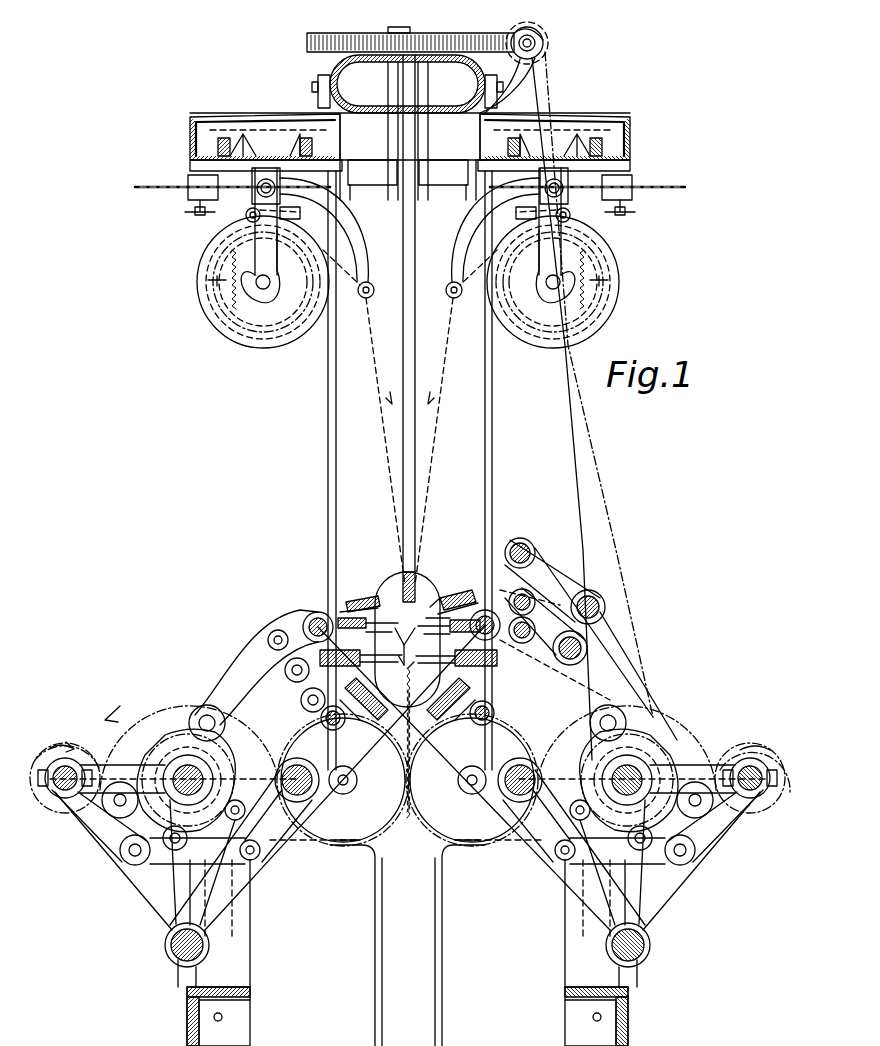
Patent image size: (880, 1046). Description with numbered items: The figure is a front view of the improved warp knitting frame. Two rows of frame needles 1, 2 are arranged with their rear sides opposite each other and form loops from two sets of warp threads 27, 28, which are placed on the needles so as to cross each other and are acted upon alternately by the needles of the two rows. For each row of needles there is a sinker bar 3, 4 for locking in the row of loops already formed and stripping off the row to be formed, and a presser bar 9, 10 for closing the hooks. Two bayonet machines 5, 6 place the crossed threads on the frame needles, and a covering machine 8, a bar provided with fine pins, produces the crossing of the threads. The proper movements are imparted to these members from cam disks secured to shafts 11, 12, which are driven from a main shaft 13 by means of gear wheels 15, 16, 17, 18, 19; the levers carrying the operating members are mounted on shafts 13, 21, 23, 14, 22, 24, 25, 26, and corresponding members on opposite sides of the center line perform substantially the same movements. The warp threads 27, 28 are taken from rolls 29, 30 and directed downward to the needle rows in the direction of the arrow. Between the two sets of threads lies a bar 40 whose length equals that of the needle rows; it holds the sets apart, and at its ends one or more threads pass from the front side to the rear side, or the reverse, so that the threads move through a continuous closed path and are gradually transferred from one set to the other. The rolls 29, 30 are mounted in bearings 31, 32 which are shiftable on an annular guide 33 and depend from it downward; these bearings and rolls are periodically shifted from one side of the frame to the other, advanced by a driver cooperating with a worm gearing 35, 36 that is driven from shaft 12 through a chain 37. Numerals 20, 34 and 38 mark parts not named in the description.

The frame needles 1 is at (358, 704).
The frame needles 2 is at (454, 702).
The sinker bar 3 is at (408, 655).
The sinker bar 4 is at (414, 740).
The bayonet machine 5 is at (368, 629).
The bayonet machine 6 is at (398, 646).
The covering machine 8 is at (445, 582).
The presser bar 9 is at (378, 630).
The presser bar 10 is at (446, 639).
The shaft 11 is at (160, 835).
The shaft 12 is at (700, 842).
The main shaft 13 is at (60, 800).
The shaft 14 is at (748, 800).
The gear wheel 15 is at (58, 752).
The gear wheel 16 is at (165, 692).
The gear wheel 17 is at (343, 780).
The gear wheel 18 is at (472, 785).
The gear wheel 19 is at (682, 712).
The right rotation arrow 20 is at (742, 757).
The shaft 21 is at (166, 950).
The shaft 22 is at (648, 947).
The shaft 23 is at (298, 802).
The shaft 24 is at (518, 802).
The shaft 25 is at (586, 650).
The shaft 26 is at (605, 604).
The warp threads 27 is at (384, 384).
The warp threads 28 is at (436, 384).
The roll 29 is at (224, 336).
The roll 30 is at (610, 320).
The bearing 31 is at (190, 165).
The bearing 32 is at (630, 168).
The annular guide 33 is at (190, 133).
The central block 34 is at (375, 172).
The worm gearing 35 is at (542, 43).
The worm gearing 36 is at (432, 38).
The chain 37 is at (602, 493).
The ribbon path 38 is at (400, 750).
The bar 40 is at (392, 580).